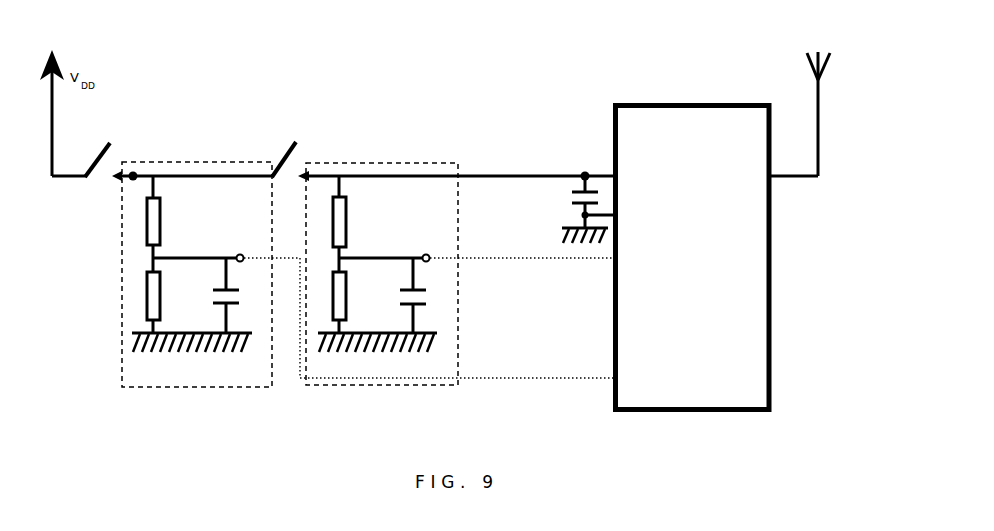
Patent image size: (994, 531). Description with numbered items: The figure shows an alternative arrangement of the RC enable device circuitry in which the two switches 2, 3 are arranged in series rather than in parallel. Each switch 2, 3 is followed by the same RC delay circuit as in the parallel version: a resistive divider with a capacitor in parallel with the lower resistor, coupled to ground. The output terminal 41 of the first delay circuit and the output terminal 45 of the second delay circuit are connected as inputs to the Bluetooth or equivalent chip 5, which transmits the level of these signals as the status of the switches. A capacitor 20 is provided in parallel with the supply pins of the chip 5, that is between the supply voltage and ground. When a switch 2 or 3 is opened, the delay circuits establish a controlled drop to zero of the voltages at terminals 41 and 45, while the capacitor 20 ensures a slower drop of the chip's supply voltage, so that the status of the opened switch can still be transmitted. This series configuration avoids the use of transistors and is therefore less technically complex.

The switch 2 is at (92, 143).
The switch 3 is at (275, 147).
The wireless transmission device 5 is at (712, 122).
The capacitor 20 is at (600, 192).
The output terminal 41 is at (231, 249).
The output terminal 45 is at (421, 249).